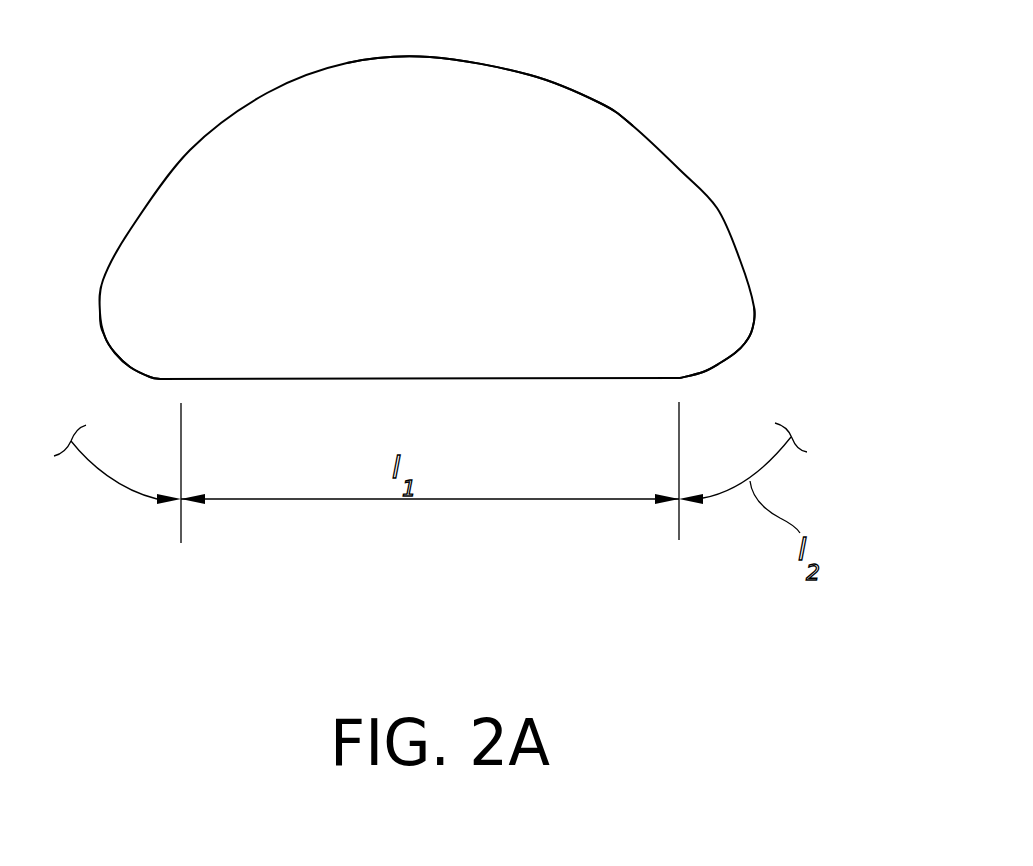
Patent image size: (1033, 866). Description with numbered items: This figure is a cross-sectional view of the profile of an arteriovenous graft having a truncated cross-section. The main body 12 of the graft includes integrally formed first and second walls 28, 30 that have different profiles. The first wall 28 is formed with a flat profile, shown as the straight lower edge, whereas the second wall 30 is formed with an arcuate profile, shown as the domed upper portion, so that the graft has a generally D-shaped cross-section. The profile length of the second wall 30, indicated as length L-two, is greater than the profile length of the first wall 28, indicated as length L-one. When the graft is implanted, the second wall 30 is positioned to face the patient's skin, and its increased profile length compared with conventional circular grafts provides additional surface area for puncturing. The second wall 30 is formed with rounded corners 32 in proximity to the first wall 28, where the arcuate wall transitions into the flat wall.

The main body 12 is at (718, 209).
The first wall 28 is at (552, 380).
The second wall 30 is at (632, 124).
The rounded corners 32 is at (118, 352).